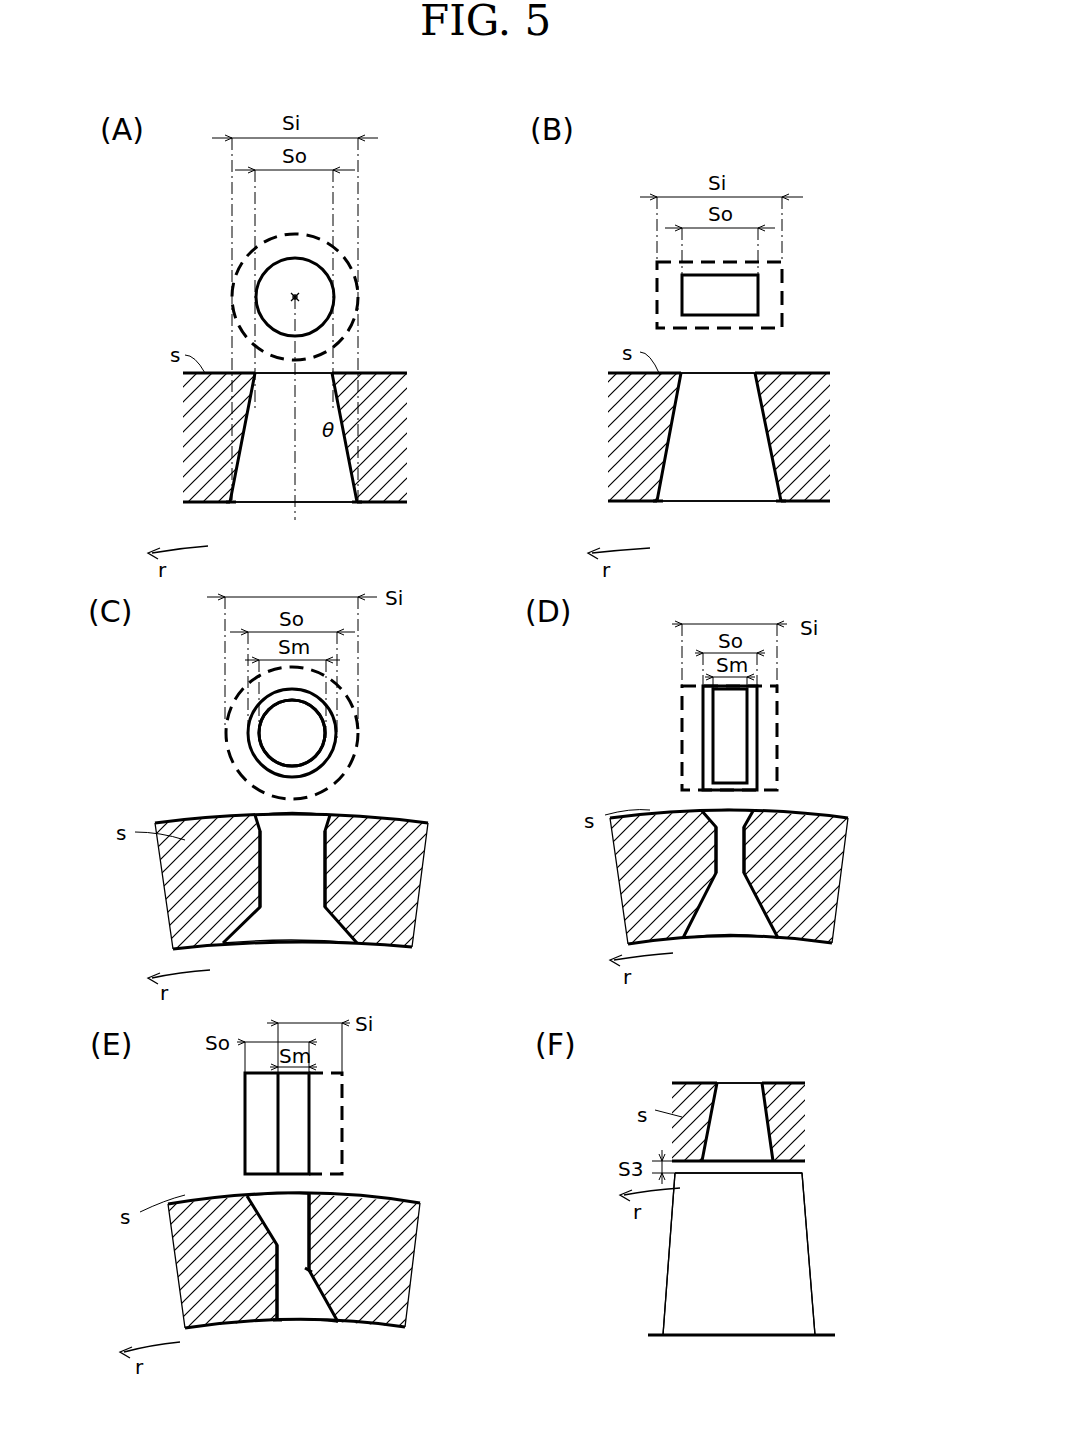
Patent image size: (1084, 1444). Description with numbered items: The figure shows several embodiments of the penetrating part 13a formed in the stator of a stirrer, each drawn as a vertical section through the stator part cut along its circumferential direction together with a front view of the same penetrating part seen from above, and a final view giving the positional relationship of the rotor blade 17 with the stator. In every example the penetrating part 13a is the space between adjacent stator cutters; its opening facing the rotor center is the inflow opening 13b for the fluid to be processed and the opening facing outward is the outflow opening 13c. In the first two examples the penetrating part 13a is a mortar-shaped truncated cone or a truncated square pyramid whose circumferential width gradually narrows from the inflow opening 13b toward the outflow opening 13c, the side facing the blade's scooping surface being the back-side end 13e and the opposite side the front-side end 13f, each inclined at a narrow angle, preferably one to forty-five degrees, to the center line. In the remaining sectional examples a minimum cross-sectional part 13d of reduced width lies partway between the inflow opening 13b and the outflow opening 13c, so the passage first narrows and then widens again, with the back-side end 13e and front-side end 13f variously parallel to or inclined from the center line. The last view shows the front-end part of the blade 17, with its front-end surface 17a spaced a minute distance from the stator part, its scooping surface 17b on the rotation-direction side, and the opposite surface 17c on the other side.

The penetrating part 13a is at (272, 1343).
The inflow opening 13b is at (358, 292).
The outflow opening 13c is at (334, 297).
The minimum cross-sectional part 13d is at (325, 737).
The back-side end 13e is at (233, 502).
The front-side end 13f is at (440, 1300).
The blade 17 is at (741, 1254).
The front-end surface 17a is at (745, 1175).
The scooping surface 17b is at (668, 1247).
The opposite surface 17c is at (808, 1253).